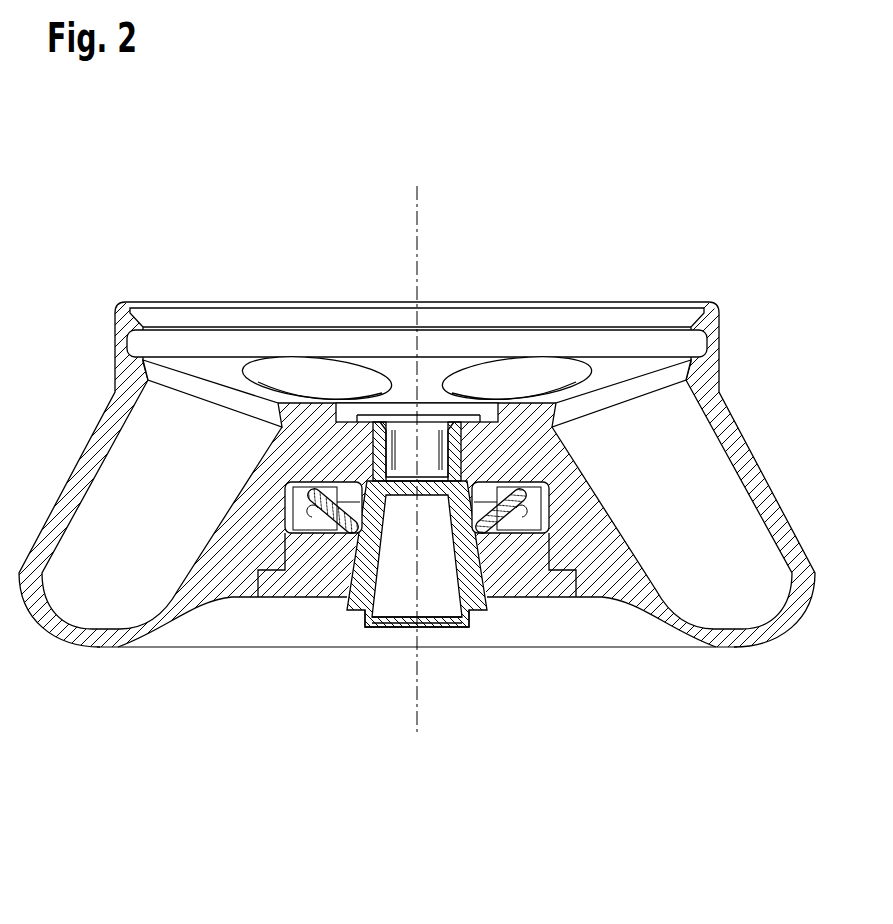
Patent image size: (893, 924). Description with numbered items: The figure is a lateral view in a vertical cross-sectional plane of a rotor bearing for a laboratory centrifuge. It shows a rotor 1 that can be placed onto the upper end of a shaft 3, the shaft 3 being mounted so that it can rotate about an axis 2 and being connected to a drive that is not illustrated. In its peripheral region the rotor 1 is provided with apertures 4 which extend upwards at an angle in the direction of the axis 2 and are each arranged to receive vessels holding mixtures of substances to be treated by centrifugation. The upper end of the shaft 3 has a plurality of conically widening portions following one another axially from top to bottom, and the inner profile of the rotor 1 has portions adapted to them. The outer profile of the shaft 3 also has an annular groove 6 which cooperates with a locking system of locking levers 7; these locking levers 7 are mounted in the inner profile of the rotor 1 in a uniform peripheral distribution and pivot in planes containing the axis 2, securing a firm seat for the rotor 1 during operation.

The rotor 1 is at (603, 563).
The axis 2 is at (417, 226).
The shaft 3 is at (478, 595).
The apertures 4 is at (145, 463).
The annular groove 6 is at (352, 615).
The locking levers 7 is at (315, 520).